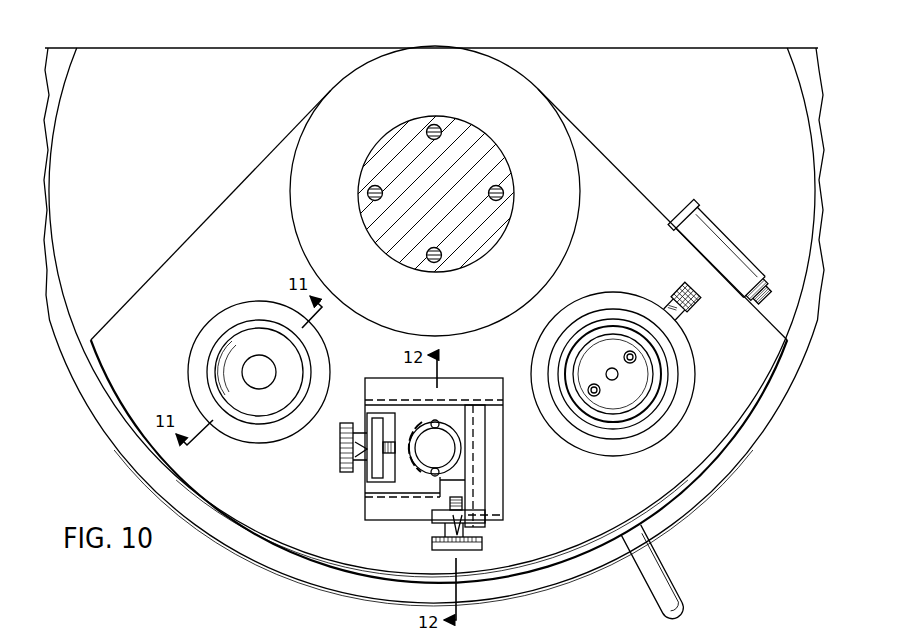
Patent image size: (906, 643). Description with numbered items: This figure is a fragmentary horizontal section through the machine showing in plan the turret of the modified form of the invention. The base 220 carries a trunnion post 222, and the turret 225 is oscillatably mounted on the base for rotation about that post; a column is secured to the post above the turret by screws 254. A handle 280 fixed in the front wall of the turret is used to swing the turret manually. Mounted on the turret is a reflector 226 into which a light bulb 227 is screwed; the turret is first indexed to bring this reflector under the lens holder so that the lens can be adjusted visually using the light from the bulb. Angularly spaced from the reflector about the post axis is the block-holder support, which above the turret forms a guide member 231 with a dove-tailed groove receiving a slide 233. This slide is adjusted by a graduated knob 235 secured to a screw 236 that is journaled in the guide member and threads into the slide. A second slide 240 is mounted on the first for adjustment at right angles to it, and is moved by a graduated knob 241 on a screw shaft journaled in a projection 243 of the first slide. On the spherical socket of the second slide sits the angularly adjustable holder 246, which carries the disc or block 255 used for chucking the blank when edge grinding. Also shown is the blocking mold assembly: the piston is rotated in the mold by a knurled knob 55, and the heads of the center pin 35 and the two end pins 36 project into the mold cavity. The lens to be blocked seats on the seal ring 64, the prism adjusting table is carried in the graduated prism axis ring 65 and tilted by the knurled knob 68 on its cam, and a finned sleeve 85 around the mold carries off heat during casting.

The base 220 is at (722, 492).
The trunnion post 222 is at (486, 244).
The turret 225 is at (620, 185).
The reflector 226 is at (238, 404).
The light bulb 227 is at (266, 384).
The guide member 231 is at (377, 513).
The slide 233 is at (402, 485).
The graduated knob 235 is at (342, 472).
The screw 236 is at (388, 440).
The second slide 240 is at (458, 478).
The graduated knob 241 is at (480, 544).
The projection 243 is at (482, 512).
The holder 246 is at (459, 432).
The screws 254 is at (499, 191).
The disc or block 255 is at (418, 430).
The handle 280 is at (658, 570).
The center pin 35 is at (612, 370).
The end pins 36 is at (632, 363).
The seal ring 64 is at (618, 425).
The graduated prism axis ring 65 is at (691, 369).
The knurled knob 68 is at (678, 293).
The finned sleeve 85 is at (684, 388).
The knurled knob 55 is at (776, 277).